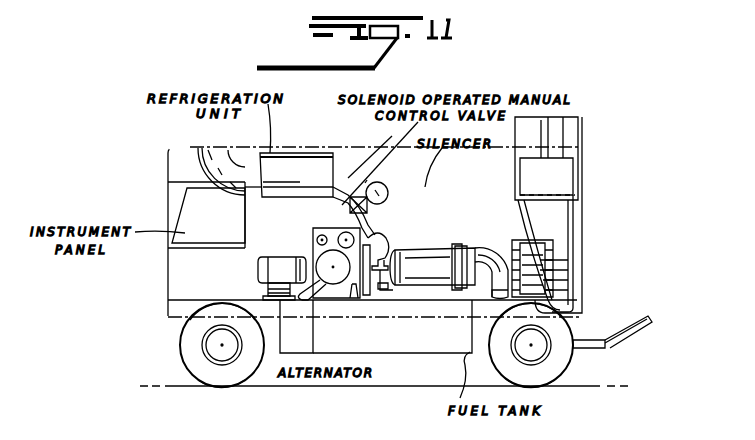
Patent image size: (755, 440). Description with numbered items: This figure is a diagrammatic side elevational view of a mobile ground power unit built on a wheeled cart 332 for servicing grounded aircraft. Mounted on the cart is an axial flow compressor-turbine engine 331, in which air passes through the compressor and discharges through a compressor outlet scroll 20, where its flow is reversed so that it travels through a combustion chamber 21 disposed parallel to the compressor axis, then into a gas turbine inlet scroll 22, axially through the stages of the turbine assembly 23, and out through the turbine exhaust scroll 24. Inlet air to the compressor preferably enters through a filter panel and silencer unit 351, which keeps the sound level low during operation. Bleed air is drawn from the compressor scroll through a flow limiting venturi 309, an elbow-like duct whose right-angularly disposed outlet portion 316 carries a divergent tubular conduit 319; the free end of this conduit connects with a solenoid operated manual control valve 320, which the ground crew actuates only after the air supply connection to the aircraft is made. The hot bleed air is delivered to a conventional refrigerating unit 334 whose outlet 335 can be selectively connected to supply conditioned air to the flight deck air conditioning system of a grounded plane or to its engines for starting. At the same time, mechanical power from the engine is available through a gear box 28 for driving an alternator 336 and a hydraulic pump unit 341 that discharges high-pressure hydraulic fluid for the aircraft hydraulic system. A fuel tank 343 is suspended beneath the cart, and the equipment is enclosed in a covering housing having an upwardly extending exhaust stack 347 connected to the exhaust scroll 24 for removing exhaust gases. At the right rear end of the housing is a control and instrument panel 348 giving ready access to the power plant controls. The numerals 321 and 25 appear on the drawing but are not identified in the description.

The outlet portion 316 is at (185, 152).
The refrigerating unit 334 is at (305, 153).
The outlet 335 is at (374, 171).
The solenoid operated manual control valve 320 is at (384, 186).
The filter panel and silencer unit 351 is at (455, 196).
The exhaust stack 347 is at (578, 118).
The gas turbine inlet scroll 22 is at (500, 226).
The turbine exhaust scroll 24 is at (594, 223).
The control and instrument panel 348 is at (186, 218).
The gear box 28 is at (294, 232).
The tubular conduit 319 is at (340, 222).
The hydraulic pump unit 341 is at (282, 256).
The flow limiting venturi 309 is at (406, 232).
The axial flow compressor-turbine engine 331 is at (484, 228).
The combustion chamber 21 is at (427, 266).
The fitting 321 is at (386, 284).
The wheeled cart 332 is at (175, 313).
The alternator 336 is at (328, 278).
The compressor outlet scroll 20 is at (378, 308).
The turbine assembly 23 is at (491, 291).
The fuel tank 25 is at (440, 306).
The fuel tank 343 is at (432, 346).